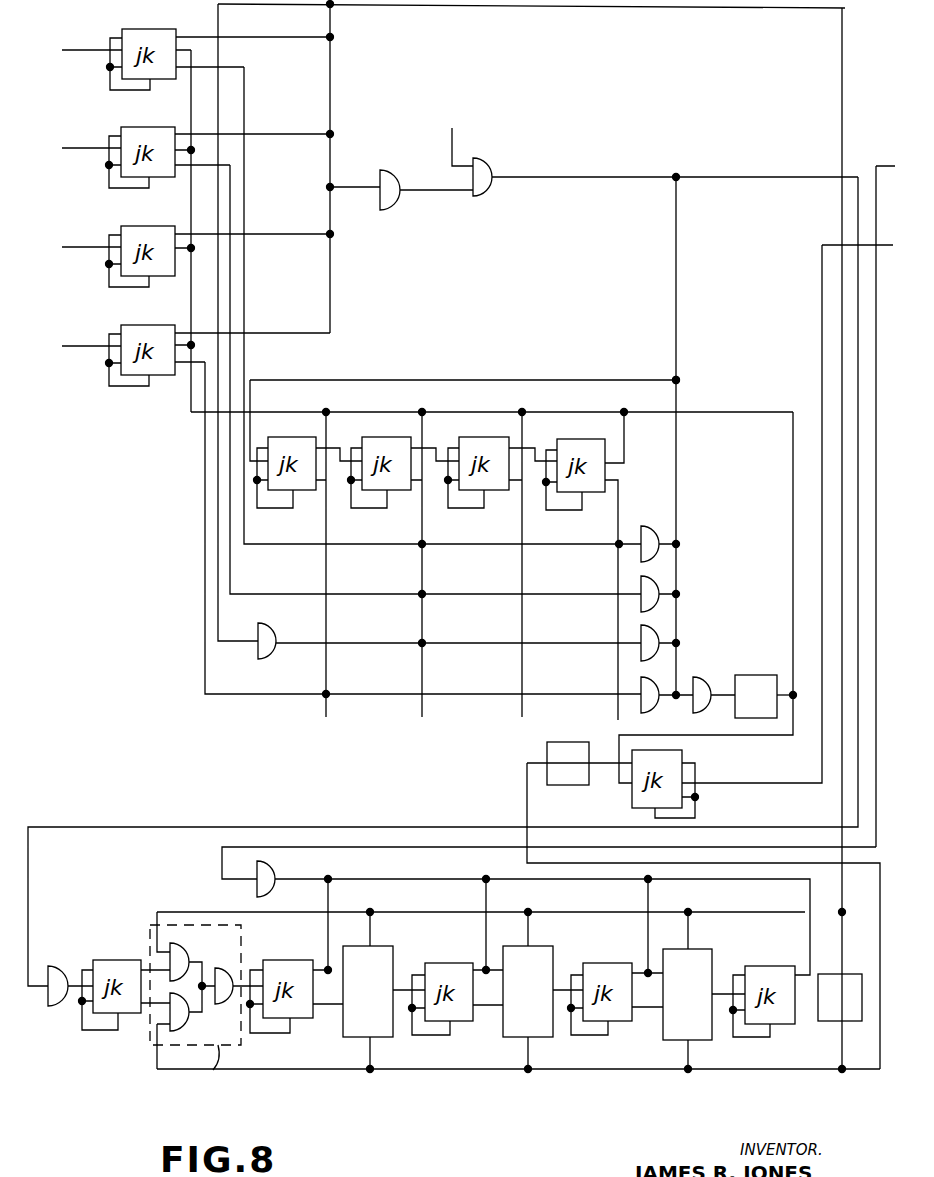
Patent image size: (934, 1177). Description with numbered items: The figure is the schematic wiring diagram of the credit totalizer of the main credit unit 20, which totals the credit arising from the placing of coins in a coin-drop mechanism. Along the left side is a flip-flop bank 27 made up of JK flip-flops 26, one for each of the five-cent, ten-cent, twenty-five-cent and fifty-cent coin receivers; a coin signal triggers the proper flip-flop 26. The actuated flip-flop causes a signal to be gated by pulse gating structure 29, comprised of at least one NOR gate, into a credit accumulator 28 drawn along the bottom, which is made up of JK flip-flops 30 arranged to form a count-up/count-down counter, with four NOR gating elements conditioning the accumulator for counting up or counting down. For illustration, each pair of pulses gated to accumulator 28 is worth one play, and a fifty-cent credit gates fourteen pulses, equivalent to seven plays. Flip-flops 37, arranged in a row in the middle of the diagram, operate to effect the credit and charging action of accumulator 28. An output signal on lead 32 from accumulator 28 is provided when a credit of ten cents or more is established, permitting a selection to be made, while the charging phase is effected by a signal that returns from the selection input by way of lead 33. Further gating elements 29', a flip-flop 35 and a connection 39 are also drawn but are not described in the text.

The main credit unit 20 is at (183, 536).
The JK flip-flop 26 is at (176, 80).
The flip-flop bank 27 is at (120, 433).
The credit accumulator 28 is at (357, 878).
The pulse gating structure 29 is at (538, 106).
The decoding gates 29' is at (712, 548).
The JK flip-flops 30 is at (118, 960).
The lead 32 is at (745, 847).
The lead 33 is at (822, 362).
The control flip-flop 35 is at (690, 750).
The flip-flops 37 is at (378, 437).
The buffer line 39 is at (527, 797).